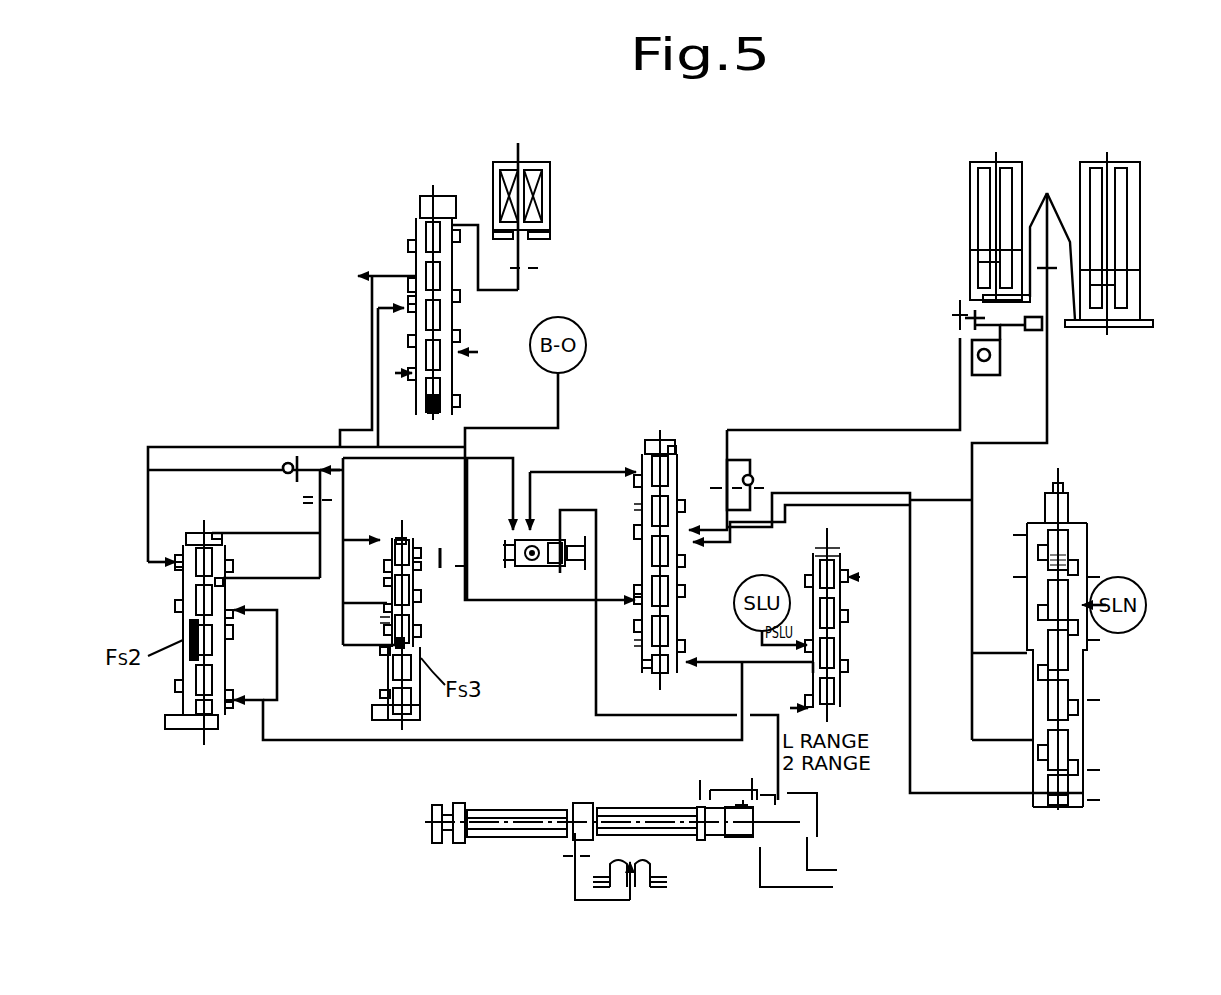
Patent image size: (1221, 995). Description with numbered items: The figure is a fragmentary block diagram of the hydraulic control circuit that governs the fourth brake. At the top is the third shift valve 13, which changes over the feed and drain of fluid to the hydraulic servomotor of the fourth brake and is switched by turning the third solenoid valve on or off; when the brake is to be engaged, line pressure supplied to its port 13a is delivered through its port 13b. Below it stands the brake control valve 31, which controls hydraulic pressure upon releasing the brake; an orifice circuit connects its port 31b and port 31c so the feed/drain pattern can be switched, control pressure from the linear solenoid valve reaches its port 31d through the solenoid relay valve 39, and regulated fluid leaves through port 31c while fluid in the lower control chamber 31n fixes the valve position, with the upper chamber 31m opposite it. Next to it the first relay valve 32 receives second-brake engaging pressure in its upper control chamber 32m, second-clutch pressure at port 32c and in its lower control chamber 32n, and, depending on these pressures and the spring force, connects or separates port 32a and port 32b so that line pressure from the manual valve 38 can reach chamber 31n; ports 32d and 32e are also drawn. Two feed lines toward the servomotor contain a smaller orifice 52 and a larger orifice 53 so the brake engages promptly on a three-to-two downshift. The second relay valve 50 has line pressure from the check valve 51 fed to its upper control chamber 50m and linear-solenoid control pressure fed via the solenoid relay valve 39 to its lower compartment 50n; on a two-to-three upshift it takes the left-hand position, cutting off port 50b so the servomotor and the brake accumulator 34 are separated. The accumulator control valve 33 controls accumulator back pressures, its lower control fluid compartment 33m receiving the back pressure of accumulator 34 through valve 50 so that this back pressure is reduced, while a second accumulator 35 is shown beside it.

The third shift valve 13 is at (408, 202).
The port of third shift valve 13a is at (403, 300).
The port of third shift valve 13b is at (412, 312).
The B-0 control valve 31 is at (188, 745).
The port of B-0 control valve 31b is at (175, 566).
The port of B-0 control valve 31c is at (221, 578).
The port of B-0 control valve 31d is at (262, 617).
The control chamber of B-0 control valve 31m is at (228, 537).
The control chamber of B-0 control valve 31n is at (227, 708).
The first relay valve 32 is at (424, 631).
The port of first relay valve 32a is at (392, 608).
The port of first relay valve 32b is at (462, 573).
The port of first relay valve 32c is at (387, 650).
The port of first relay valve 32d is at (392, 582).
The port of first relay valve 32e is at (430, 563).
The control chamber of first relay valve 32m is at (400, 538).
The control chamber of first relay valve 32n is at (384, 694).
The accumulator control valve 33 is at (1103, 472).
The control fluid compartment of accumulator control valve 33m is at (1060, 797).
The B-0 accumulator 34 is at (1000, 153).
The accumulator 35 is at (1113, 153).
The manual valve 38 is at (546, 803).
The solenoid relay valve 39 is at (831, 518).
The second relay valve 50 is at (674, 412).
The port of second relay valve 50b is at (640, 603).
The control chamber of second relay valve 50m is at (676, 452).
The control fluid compartment of second relay valve 50n is at (650, 668).
The check valve 51 is at (543, 532).
The smaller orifice 52 is at (304, 506).
The larger orifice 53 is at (450, 556).